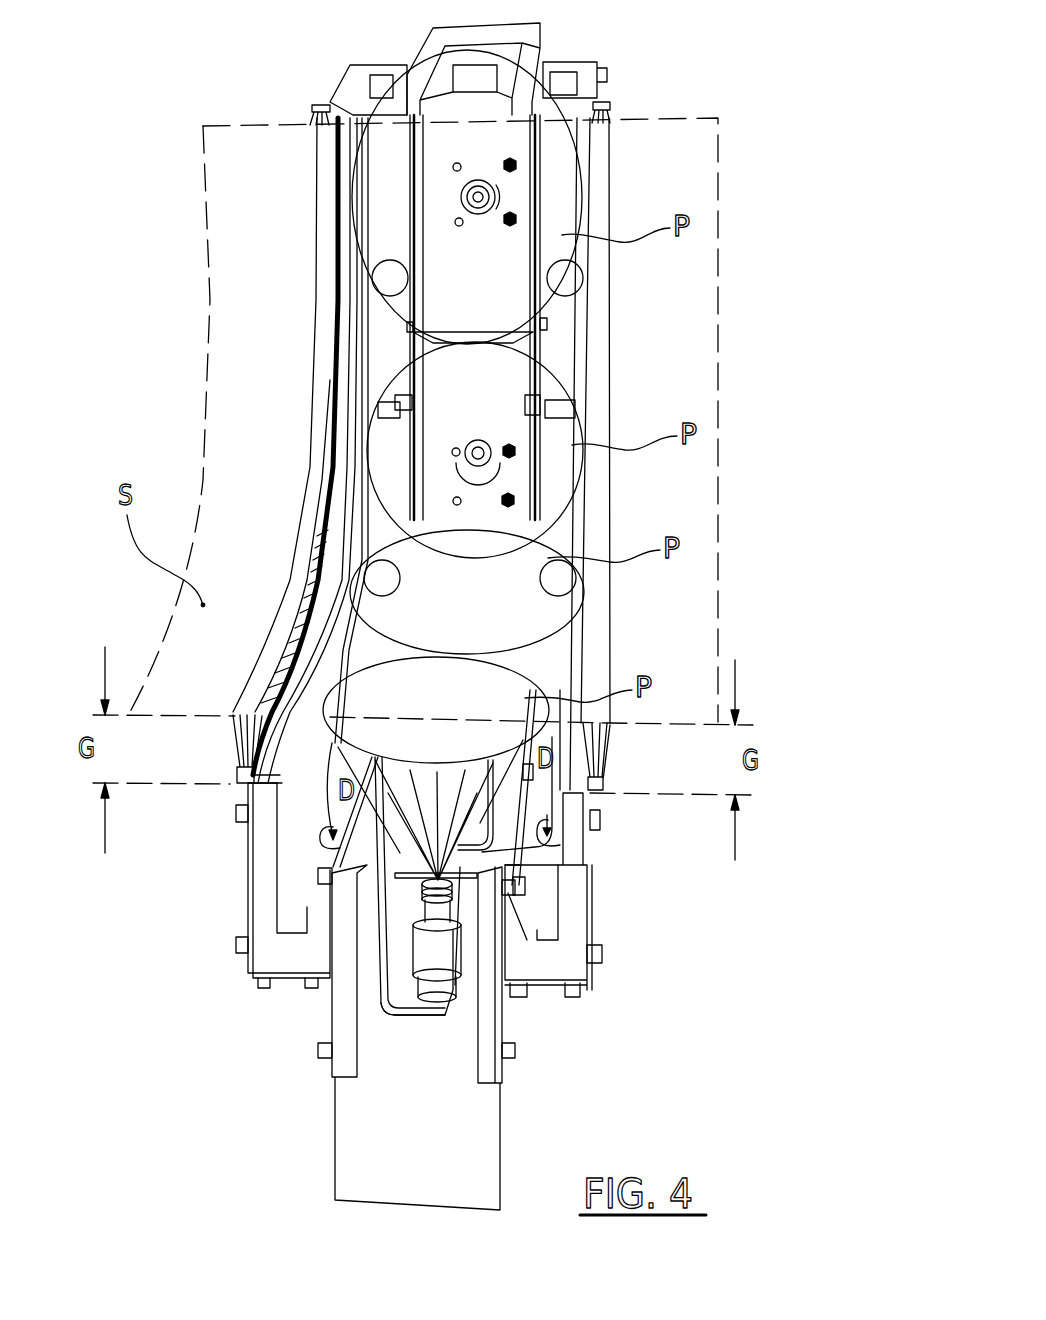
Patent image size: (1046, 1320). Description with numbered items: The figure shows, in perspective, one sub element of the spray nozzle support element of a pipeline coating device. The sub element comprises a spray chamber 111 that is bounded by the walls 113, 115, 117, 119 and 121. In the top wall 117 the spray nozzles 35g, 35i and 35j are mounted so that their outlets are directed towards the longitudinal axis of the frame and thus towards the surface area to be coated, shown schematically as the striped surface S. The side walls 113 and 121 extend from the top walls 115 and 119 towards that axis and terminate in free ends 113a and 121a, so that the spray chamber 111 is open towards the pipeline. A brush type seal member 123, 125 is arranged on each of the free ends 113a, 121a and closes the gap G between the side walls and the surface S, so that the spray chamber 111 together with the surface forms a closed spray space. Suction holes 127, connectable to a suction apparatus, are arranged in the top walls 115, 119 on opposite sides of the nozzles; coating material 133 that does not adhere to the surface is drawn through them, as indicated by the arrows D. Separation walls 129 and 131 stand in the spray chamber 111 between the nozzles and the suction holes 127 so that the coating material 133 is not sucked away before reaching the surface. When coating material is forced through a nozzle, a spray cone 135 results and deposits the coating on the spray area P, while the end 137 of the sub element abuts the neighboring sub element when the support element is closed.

The end of the sub element 137 is at (573, 22).
The top wall 117 is at (470, 108).
The spray nozzle 35j is at (490, 195).
The spray nozzle 35i is at (490, 470).
The spray nozzle 35g is at (445, 957).
The spray chamber 111 is at (580, 338).
The suction holes 127 is at (572, 282).
The coating material 133 is at (384, 687).
The brush type seal member 125 is at (240, 735).
The brush type seal member 123 is at (595, 742).
The side wall 113 is at (292, 852).
The free end of side wall 113a is at (217, 794).
The top wall 115 is at (305, 917).
The separation wall 129 is at (390, 935).
The top wall 119 is at (533, 918).
The side wall 121 is at (590, 848).
The free end of side wall 121a is at (612, 812).
The separation wall 131 is at (513, 866).
The spray cone 135 is at (365, 1148).